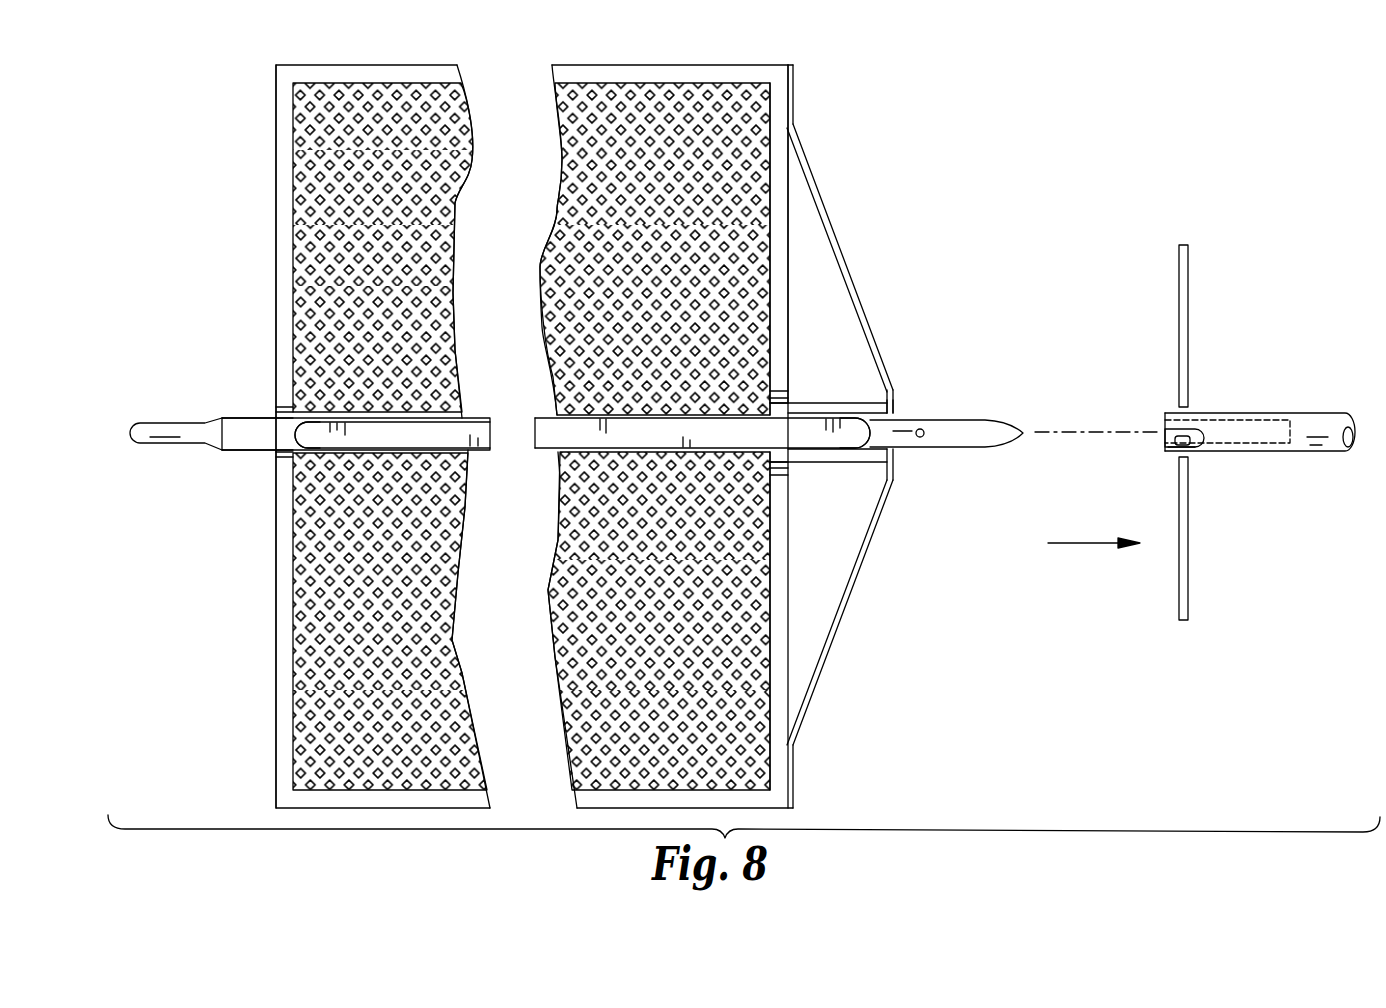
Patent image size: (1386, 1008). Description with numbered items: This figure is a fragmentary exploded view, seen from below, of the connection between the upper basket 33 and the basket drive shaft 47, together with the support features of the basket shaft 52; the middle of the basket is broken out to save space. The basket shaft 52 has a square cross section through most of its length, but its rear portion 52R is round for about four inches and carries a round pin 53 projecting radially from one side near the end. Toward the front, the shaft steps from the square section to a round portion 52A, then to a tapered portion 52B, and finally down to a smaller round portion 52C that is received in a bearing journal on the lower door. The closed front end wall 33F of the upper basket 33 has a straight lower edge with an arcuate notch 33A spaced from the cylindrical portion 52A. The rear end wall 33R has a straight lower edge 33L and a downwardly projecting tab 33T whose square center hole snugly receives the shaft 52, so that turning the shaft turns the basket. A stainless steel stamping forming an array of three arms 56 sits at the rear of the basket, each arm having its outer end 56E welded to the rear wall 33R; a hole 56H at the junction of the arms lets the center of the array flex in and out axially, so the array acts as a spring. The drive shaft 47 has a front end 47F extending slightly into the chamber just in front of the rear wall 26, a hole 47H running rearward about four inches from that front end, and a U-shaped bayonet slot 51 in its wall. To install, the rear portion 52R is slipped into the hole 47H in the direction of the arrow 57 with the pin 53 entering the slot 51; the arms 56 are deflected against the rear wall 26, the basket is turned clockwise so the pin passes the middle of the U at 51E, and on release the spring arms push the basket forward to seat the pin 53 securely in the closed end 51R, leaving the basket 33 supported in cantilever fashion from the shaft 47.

The rear wall 26 is at (1180, 340).
The upper basket 33 is at (855, 129).
The front end wall 33F is at (276, 197).
The arcuate notch 33A is at (276, 455).
The rear end wall 33R is at (788, 210).
The straight lower edge 33L is at (783, 358).
The downwardly projecting tab 33T is at (782, 458).
The basket drive shaft 47 is at (1313, 415).
The front end 47F is at (1165, 430).
The hole 47H is at (1247, 420).
The bayonet slot 51 is at (1165, 449).
The middle of the U 51E is at (1186, 446).
The closed end of the slot 51R is at (1192, 448).
The basket shaft 52 is at (485, 437).
The round portion 52A is at (300, 408).
The tapered portion 52B is at (222, 420).
The round portion 52C is at (157, 443).
The rear portion 52R is at (962, 440).
The round pin 53 is at (935, 430).
The arms 56 is at (870, 318).
The outer end 56E is at (794, 92).
The hole 56H is at (892, 417).
The arrow 57 is at (1068, 548).